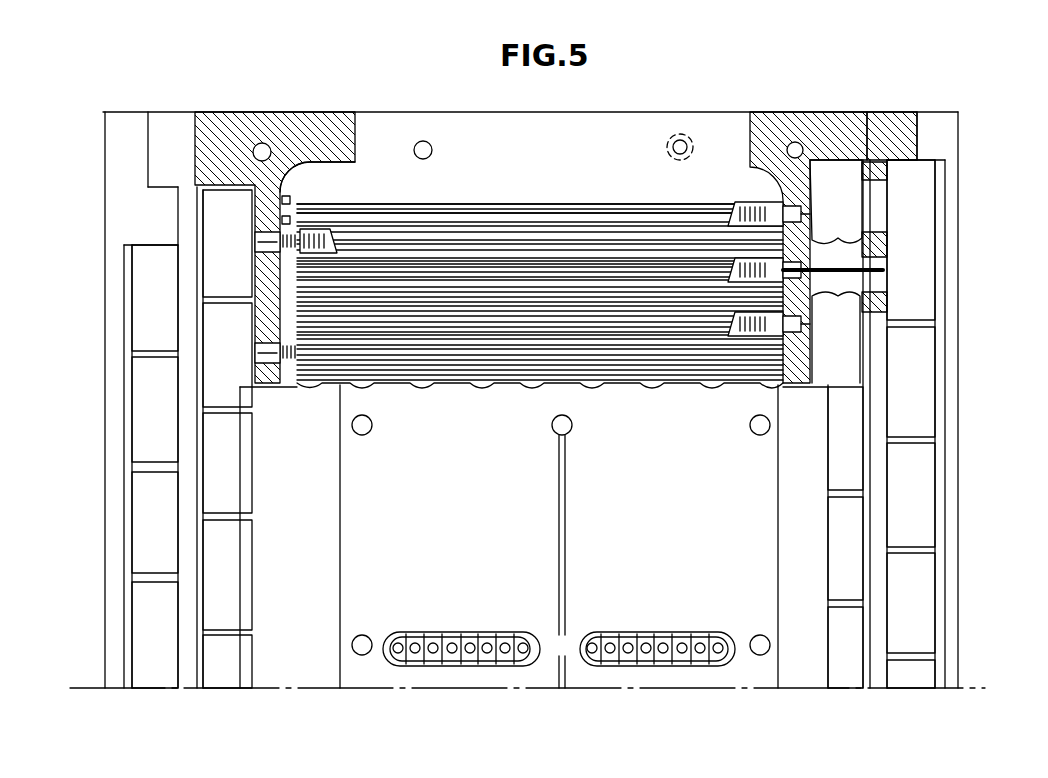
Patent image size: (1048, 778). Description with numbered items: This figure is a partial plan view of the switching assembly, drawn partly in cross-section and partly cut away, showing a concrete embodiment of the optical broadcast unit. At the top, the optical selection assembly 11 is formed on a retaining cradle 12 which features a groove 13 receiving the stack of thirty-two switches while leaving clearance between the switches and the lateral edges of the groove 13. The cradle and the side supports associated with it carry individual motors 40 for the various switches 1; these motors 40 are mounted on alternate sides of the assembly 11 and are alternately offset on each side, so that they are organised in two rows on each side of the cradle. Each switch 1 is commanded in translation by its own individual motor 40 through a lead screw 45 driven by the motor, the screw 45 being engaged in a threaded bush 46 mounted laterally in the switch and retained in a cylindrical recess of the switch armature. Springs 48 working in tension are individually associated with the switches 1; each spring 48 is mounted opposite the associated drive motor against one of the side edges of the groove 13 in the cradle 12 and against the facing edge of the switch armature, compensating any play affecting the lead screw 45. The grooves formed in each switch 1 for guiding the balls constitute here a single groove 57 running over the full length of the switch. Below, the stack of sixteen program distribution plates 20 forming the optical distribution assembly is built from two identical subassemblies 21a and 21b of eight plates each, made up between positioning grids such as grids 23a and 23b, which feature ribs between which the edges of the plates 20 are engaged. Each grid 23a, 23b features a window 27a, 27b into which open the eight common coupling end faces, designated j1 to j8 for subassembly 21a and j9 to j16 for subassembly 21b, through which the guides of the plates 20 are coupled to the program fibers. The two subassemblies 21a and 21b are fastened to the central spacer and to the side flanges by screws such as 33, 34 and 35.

The optical selection assembly 11 is at (387, 200).
The retaining cradle 12 is at (232, 135).
The groove 13 is at (310, 165).
The spring 48 is at (285, 198).
The switch 1 is at (440, 230).
The single groove 57 is at (503, 212).
The individual motor 40 is at (235, 238).
The lead screw 45 is at (735, 210).
The threaded bush 46 is at (748, 205).
The screw 35 is at (370, 433).
The screw 34 is at (570, 433).
The screw 33 is at (752, 433).
The subassembly 21b is at (412, 637).
The window 27b is at (455, 634).
The window 27a is at (632, 634).
The subassembly 21a is at (682, 637).
The grid 23b is at (358, 660).
The grid 23a is at (748, 665).
The common coupling end face j16 is at (400, 656).
The common coupling end face j9 is at (523, 656).
The common coupling end face j8 is at (592, 656).
The common coupling end face j1 is at (718, 656).
The program distribution plate 20 is at (505, 656).